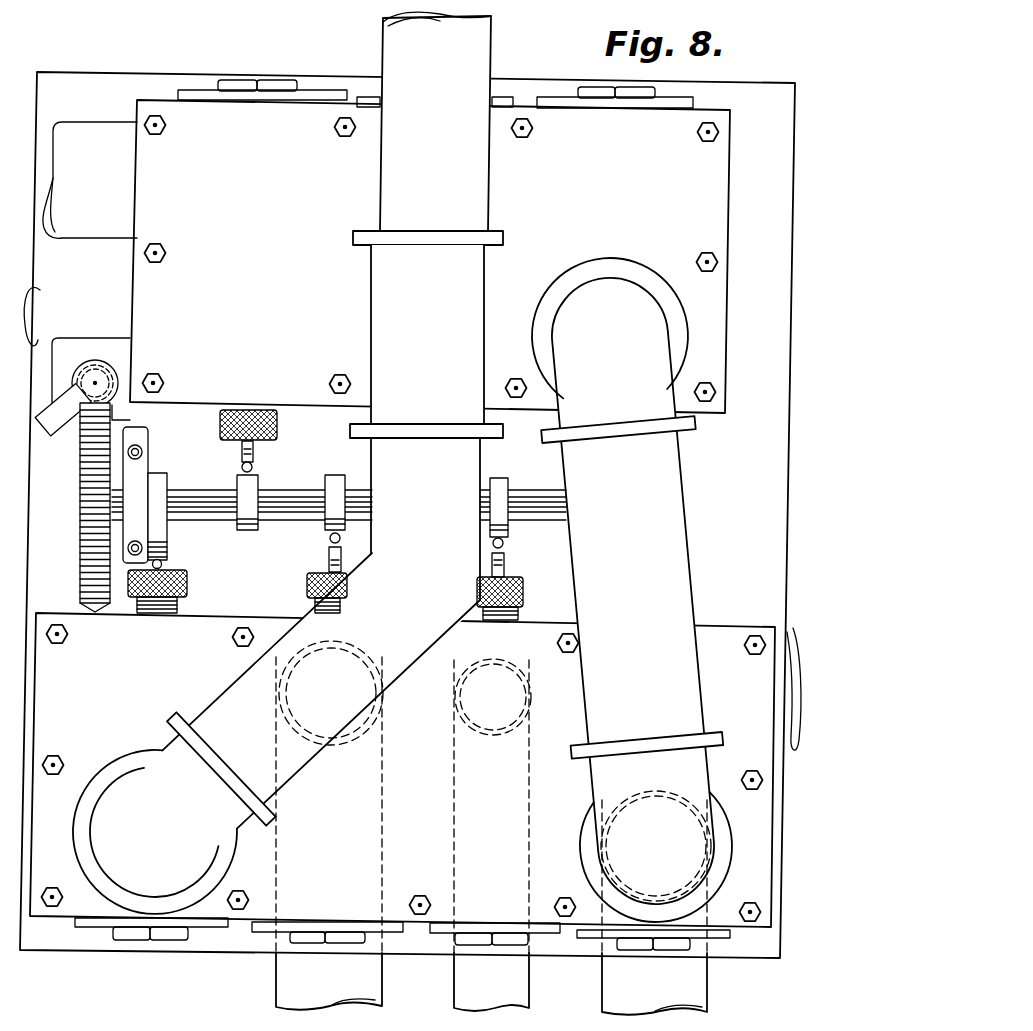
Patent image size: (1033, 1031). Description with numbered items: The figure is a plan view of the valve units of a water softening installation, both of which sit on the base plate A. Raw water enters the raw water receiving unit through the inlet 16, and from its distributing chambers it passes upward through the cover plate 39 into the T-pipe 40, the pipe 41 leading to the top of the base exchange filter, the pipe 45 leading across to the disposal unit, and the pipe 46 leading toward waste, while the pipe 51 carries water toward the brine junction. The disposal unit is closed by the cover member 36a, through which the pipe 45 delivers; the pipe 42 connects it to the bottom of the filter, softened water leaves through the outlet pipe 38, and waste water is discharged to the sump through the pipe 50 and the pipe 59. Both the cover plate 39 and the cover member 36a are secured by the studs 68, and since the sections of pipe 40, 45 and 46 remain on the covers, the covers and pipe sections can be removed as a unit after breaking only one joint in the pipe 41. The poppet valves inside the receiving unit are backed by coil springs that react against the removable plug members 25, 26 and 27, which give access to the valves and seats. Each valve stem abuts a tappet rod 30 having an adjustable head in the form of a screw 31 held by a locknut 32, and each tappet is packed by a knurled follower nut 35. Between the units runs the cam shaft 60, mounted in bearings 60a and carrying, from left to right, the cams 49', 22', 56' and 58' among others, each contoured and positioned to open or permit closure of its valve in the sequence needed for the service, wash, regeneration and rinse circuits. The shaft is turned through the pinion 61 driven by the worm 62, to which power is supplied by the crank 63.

The inlet 16 is at (79, 133).
The cam 22' is at (241, 518).
The removable plug member 25 is at (232, 79).
The removable plug member 26 is at (500, 97).
The removable plug member 27 is at (612, 88).
The tappet rod 30 is at (255, 452).
The screw 31 is at (254, 468).
The locknut 32 is at (242, 455).
The knurled follower nut 35 is at (277, 428).
The cover member 36a is at (624, 846).
The outlet pipe 38 is at (790, 628).
The cover plate 39 is at (430, 256).
The T-pipe 40 is at (426, 422).
The pipe 41 is at (478, 174).
The pipe 42 is at (700, 980).
The pipe 45 is at (667, 493).
The pipe 46 is at (278, 579).
The cam 49' is at (173, 516).
The pipe 50 is at (277, 975).
The pipe 51 is at (32, 286).
The cam 56' is at (328, 489).
The cam 58' is at (503, 490).
The pipe 59 is at (455, 977).
The cam shaft 60 is at (535, 498).
The bearing 60a is at (142, 481).
The pinion 61 is at (79, 460).
The worm 62 is at (96, 362).
The crank 63 is at (63, 409).
The stud 68 is at (168, 127).
The base plate A is at (746, 458).